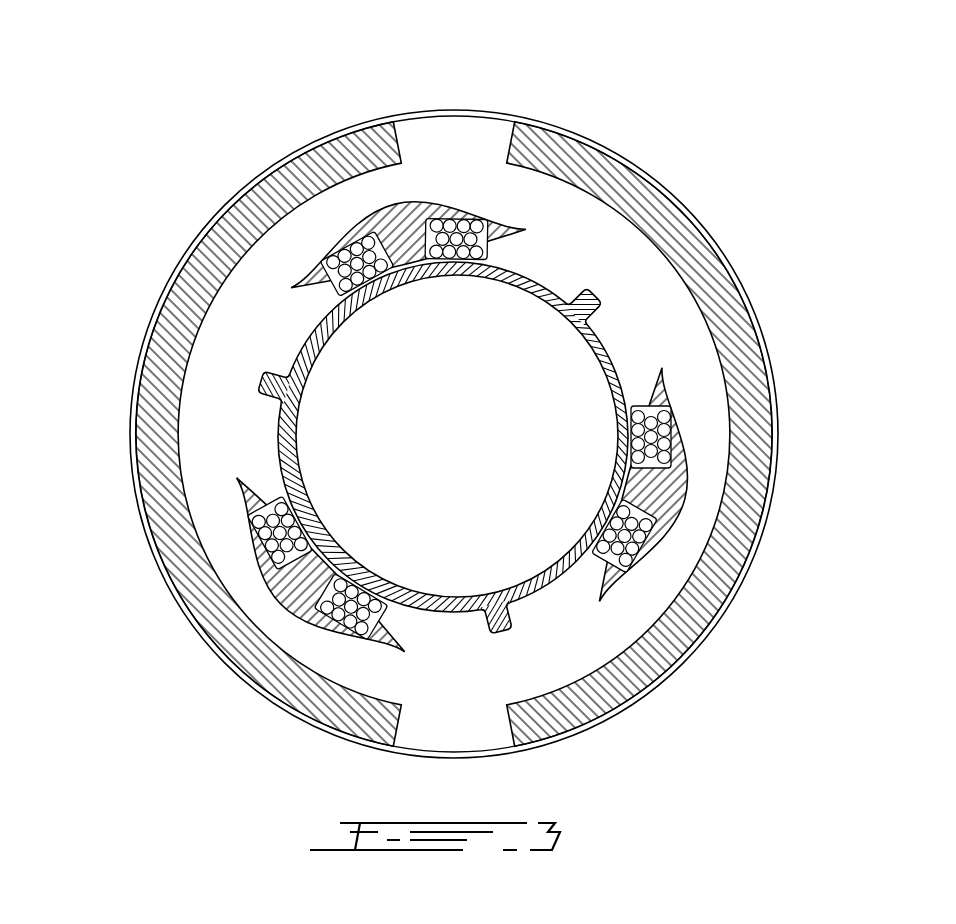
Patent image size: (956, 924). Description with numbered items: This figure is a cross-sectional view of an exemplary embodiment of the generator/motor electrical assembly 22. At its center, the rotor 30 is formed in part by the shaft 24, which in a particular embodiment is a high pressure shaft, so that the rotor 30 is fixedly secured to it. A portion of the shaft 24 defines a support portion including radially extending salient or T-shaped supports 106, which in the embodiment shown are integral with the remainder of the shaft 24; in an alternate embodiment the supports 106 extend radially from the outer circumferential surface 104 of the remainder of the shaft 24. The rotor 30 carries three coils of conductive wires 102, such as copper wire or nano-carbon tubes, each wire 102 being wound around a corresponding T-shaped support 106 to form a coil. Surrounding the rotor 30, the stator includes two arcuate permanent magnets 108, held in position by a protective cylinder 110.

The electrical assembly 22 is at (441, 381).
The shaft 24 is at (278, 432).
The rotor 30 is at (404, 367).
The conductive wires 102 is at (467, 218).
The outer circumferential surface 104 is at (533, 592).
The T-shaped supports 106 is at (397, 186).
The permanent magnets 108 is at (730, 307).
The protective cylinder 110 is at (682, 205).